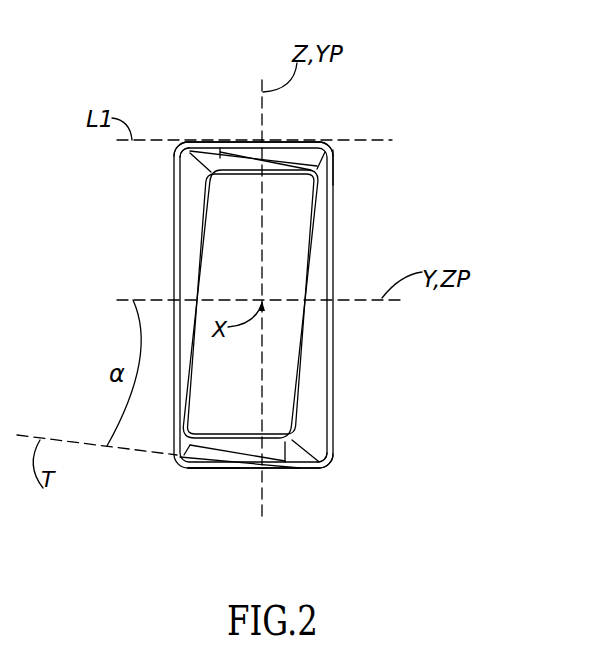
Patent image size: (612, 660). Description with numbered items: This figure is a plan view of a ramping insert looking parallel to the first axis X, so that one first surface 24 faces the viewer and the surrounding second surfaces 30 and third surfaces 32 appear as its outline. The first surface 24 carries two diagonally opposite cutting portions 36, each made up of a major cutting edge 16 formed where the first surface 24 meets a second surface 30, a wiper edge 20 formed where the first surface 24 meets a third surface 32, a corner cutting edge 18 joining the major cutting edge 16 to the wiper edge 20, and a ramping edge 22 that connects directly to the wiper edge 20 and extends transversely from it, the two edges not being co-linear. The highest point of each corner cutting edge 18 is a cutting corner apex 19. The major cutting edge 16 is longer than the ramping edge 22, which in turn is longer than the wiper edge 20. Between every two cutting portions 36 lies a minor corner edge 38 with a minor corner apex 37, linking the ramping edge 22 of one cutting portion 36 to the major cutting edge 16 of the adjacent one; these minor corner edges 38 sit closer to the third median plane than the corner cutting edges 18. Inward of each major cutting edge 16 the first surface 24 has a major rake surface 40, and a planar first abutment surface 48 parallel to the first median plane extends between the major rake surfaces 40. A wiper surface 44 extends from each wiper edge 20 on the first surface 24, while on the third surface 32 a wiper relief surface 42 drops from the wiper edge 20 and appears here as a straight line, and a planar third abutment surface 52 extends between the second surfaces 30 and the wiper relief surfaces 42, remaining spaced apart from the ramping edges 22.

The major cutting edge 16 is at (332, 400).
The corner cutting edge 18 is at (335, 455).
The cutting corner apex 19 is at (180, 148).
The wiper edge 20 is at (297, 470).
The ramping edge 22 is at (225, 472).
The first surface 24 is at (223, 247).
The second surface 30 is at (335, 270).
The third surface 32 is at (240, 142).
The cutting portion 36 is at (187, 127).
The minor corner apex 37 is at (330, 153).
The minor corner edge 38 is at (334, 167).
The major rake surface 40 is at (307, 372).
The wiper relief surface 42 is at (309, 476).
The wiper surface 44 is at (292, 458).
The first abutment surface 48 is at (228, 203).
The third abutment surface 52 is at (272, 140).